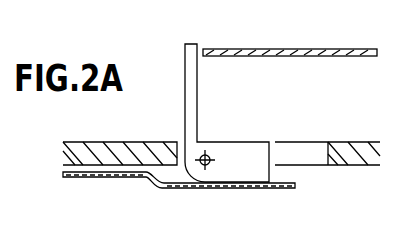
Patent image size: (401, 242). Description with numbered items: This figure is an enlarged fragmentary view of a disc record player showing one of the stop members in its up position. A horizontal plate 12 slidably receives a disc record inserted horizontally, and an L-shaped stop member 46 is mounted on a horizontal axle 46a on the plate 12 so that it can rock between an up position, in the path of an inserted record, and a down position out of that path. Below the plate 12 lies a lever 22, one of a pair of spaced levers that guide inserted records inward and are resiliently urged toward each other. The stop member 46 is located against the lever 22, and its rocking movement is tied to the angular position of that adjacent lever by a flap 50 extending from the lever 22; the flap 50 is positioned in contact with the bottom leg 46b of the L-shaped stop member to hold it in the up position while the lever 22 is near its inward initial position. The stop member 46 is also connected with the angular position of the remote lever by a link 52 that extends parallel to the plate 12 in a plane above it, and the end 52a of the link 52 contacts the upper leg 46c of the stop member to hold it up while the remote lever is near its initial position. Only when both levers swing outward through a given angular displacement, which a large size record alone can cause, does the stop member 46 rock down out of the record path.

The horizontal plate 12 is at (97, 143).
The lever 22 is at (88, 180).
The L-shaped stop member 46 is at (185, 74).
The horizontal axle 46a is at (207, 153).
The bottom leg 46b is at (251, 152).
The upper leg 46c is at (197, 98).
The flap 50 is at (272, 192).
The link 52 is at (308, 49).
The end of link 52a is at (204, 49).